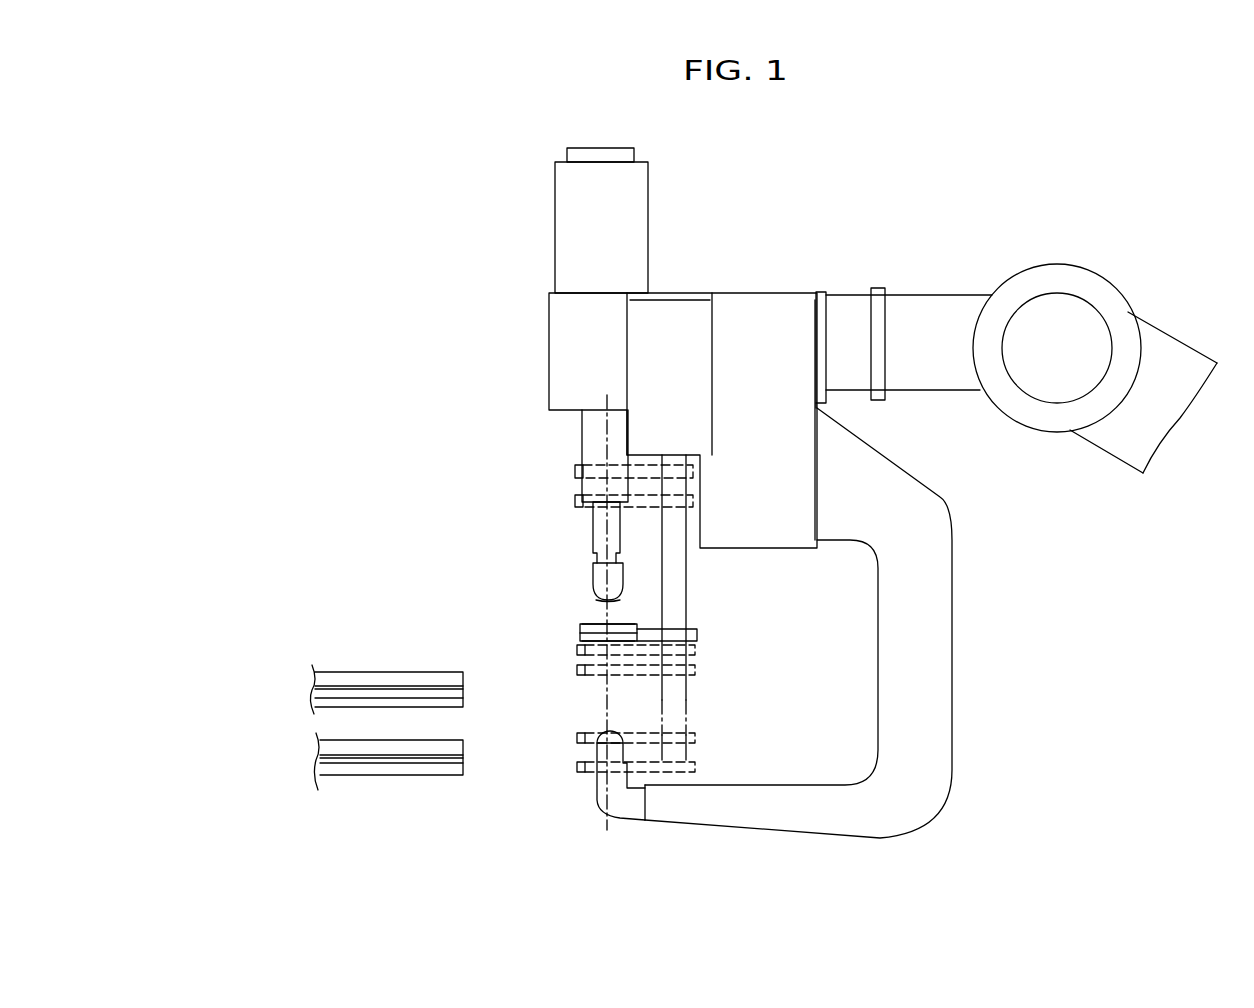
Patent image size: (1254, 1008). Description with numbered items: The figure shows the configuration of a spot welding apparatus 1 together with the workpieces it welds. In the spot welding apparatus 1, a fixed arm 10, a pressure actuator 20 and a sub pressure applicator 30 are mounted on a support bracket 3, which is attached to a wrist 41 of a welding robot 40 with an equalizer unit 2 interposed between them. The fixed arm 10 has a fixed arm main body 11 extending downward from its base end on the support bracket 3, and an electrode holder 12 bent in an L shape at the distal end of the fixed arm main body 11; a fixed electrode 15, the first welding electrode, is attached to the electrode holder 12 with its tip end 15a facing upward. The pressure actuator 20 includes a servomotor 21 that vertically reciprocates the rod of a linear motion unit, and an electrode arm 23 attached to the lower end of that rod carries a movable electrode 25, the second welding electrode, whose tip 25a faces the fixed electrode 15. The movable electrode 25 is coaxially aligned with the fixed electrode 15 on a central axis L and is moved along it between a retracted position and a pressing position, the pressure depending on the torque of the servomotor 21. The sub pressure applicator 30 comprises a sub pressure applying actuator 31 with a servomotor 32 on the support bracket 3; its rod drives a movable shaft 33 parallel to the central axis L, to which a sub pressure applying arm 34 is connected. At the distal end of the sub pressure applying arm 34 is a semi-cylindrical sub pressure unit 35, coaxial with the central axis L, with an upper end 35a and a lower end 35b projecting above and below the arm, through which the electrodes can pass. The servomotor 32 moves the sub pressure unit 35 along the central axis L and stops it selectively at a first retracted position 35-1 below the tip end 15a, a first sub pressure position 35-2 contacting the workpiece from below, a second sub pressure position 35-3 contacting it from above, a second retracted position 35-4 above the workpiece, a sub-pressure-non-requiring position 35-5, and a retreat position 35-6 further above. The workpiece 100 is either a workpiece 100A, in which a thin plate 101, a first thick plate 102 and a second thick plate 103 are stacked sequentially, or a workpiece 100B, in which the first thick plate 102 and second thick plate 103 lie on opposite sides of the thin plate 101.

The spot welding apparatus 1 is at (440, 378).
The equalizer unit 2 is at (848, 310).
The support bracket 3 is at (820, 300).
The fixed arm 10 is at (969, 601).
The fixed arm main body 11 is at (942, 662).
The electrode holder 12 is at (718, 818).
The fixed electrode 15 is at (597, 748).
The tip end 15a is at (600, 733).
The pressure actuator 20 is at (535, 260).
The servomotor 21 is at (575, 210).
The electrode arm 23 is at (595, 435).
The movable electrode 25 is at (595, 575).
The tip end of movable electrode 25a is at (600, 600).
The sub pressure applicator 30 is at (708, 572).
The sub pressure applying actuator 31 is at (705, 285).
The servomotor 32 is at (670, 310).
The movable shaft 33 is at (680, 595).
The sub pressure applying arm 34 is at (697, 635).
The sub pressure unit 35 is at (580, 632).
The upper end 35a is at (595, 625).
The lower end 35b is at (578, 645).
The first retracted position 35-1 is at (578, 769).
The first sub pressure position 35-2 is at (578, 740).
The second sub pressure position 35-3 is at (578, 673).
The second retracted position 35-4 is at (578, 654).
The sub-pressure-non-requiring position 35-5 is at (575, 500).
The retreat position 35-6 is at (575, 471).
The welding robot 40 is at (1178, 325).
The wrist 41 is at (960, 300).
The workpiece 100 is at (240, 630).
The workpiece 100A is at (343, 670).
The workpiece 100B is at (335, 737).
The thin plate 101 is at (350, 706).
The first thick plate 102 is at (405, 690).
The second thick plate 103 is at (377, 678).
The central axis L is at (607, 700).